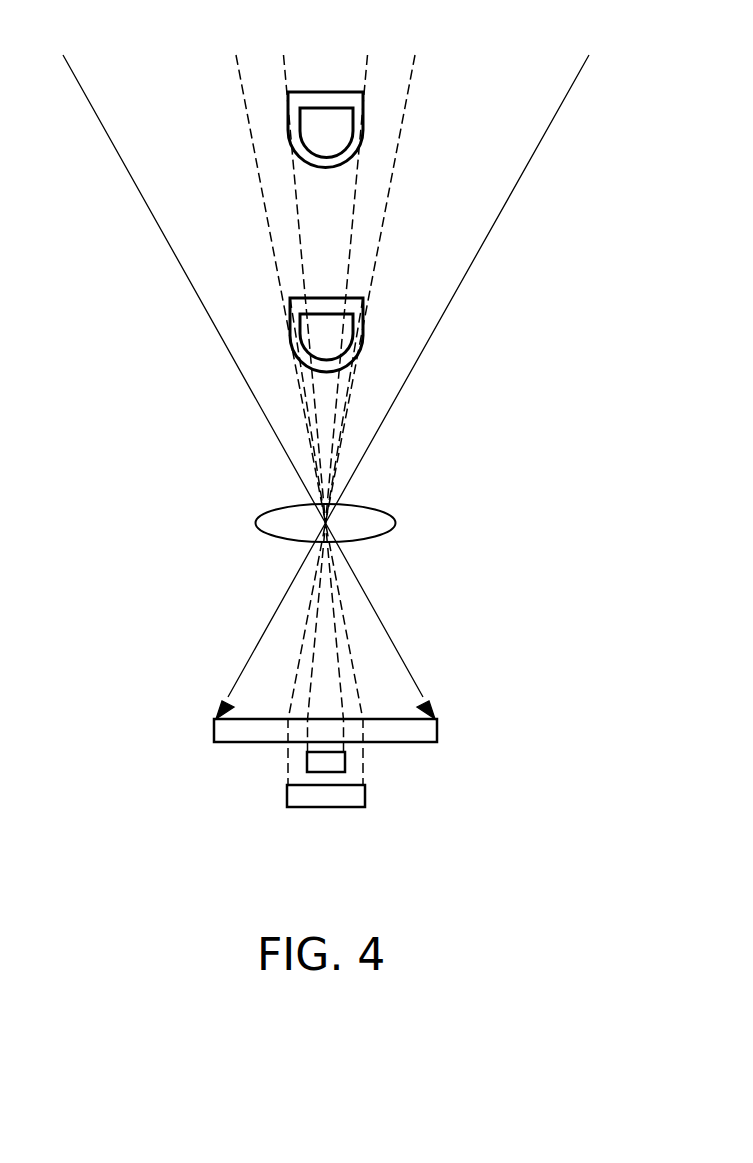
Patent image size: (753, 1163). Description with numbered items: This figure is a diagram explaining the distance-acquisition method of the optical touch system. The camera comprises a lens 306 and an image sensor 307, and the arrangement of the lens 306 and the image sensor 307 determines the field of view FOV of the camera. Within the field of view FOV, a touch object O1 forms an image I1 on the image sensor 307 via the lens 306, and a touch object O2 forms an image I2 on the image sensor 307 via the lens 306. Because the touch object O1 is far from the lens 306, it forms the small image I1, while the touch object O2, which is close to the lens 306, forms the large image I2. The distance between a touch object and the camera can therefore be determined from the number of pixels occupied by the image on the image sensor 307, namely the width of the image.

The touch object O1 is at (322, 90).
The touch object O2 is at (322, 296).
The field of view FOV is at (549, 128).
The lens 306 is at (395, 523).
The image sensor 307 is at (437, 728).
The image I1 is at (345, 762).
The image I2 is at (365, 796).